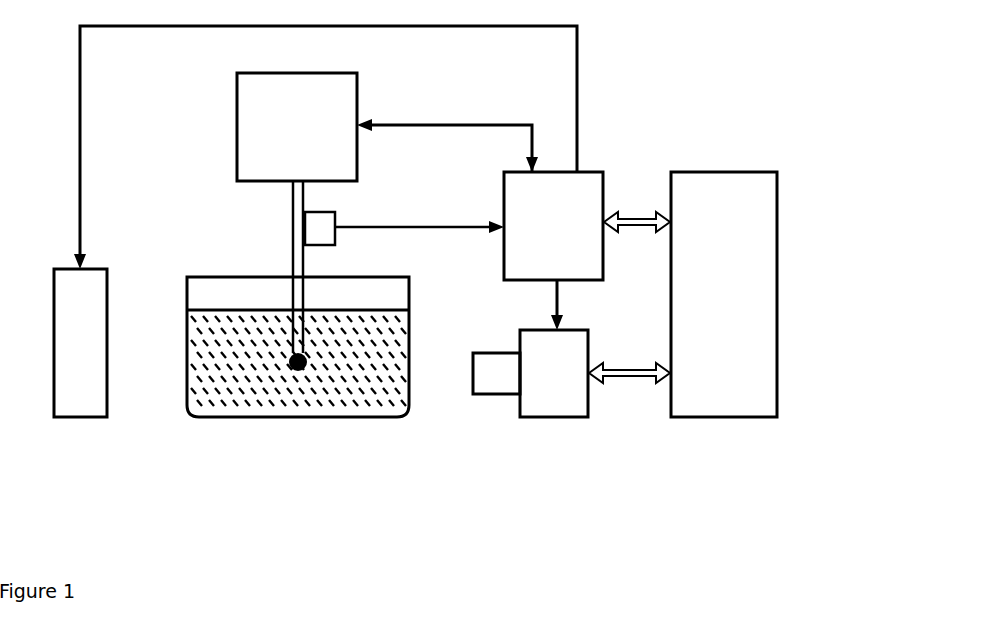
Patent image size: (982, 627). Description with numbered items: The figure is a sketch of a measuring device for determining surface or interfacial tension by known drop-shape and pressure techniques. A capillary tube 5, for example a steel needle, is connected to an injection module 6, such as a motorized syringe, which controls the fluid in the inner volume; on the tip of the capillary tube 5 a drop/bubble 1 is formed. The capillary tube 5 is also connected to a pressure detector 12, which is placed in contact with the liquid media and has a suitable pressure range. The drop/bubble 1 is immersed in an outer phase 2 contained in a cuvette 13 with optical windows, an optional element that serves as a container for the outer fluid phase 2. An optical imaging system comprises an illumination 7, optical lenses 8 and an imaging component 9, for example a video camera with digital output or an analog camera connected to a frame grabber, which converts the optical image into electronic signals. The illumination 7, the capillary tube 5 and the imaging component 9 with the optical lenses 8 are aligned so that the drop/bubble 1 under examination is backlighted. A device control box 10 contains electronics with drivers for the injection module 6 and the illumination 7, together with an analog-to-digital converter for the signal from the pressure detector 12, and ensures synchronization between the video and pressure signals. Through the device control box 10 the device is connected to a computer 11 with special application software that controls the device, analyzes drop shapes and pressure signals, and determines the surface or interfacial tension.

The drop/bubble 1 is at (306, 358).
The outer phase 2 is at (298, 361).
The capillary tube 5 is at (289, 267).
The injection module 6 is at (297, 127).
The illumination 7 is at (80, 343).
The optical lenses 8 is at (496, 373).
The imaging component 9 is at (554, 373).
The device control box 10 is at (553, 226).
The computer 11 is at (724, 294).
The pressure detector 12 is at (404, 228).
The cuvette 13 is at (187, 320).